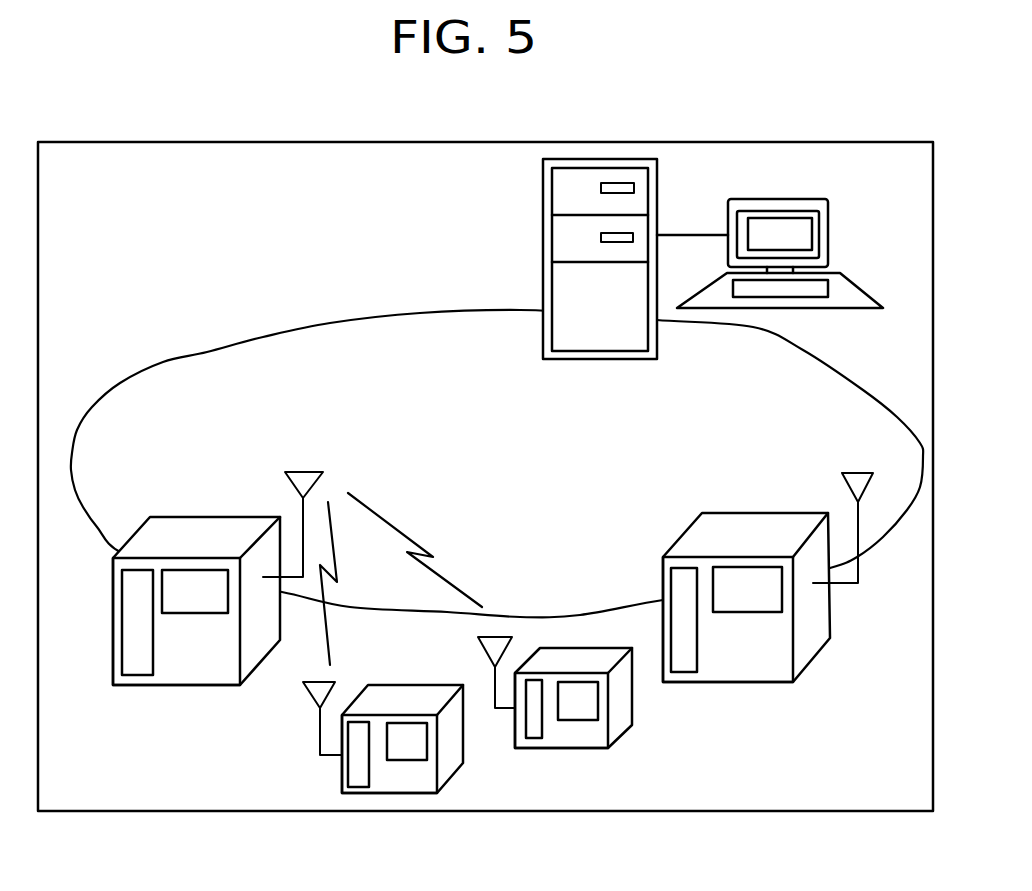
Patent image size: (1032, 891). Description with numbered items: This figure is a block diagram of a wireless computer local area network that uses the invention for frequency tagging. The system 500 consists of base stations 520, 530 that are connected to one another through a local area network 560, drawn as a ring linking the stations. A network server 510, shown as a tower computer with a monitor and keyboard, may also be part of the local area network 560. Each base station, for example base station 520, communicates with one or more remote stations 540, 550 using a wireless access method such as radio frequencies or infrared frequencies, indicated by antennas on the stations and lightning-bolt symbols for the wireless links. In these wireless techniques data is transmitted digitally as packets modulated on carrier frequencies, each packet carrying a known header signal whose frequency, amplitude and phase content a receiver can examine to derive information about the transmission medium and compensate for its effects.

The system 500 is at (762, 140).
The network server 510 is at (542, 240).
The base station 520 is at (217, 687).
The base station 530 is at (662, 568).
The remote station 540 is at (448, 772).
The remote station 550 is at (623, 735).
The local area network 560 is at (207, 352).